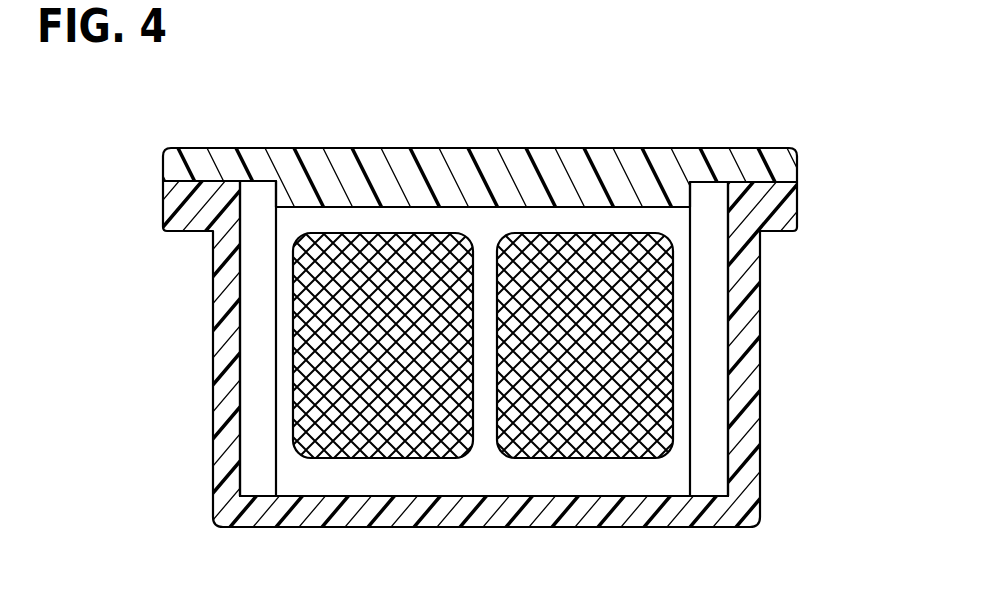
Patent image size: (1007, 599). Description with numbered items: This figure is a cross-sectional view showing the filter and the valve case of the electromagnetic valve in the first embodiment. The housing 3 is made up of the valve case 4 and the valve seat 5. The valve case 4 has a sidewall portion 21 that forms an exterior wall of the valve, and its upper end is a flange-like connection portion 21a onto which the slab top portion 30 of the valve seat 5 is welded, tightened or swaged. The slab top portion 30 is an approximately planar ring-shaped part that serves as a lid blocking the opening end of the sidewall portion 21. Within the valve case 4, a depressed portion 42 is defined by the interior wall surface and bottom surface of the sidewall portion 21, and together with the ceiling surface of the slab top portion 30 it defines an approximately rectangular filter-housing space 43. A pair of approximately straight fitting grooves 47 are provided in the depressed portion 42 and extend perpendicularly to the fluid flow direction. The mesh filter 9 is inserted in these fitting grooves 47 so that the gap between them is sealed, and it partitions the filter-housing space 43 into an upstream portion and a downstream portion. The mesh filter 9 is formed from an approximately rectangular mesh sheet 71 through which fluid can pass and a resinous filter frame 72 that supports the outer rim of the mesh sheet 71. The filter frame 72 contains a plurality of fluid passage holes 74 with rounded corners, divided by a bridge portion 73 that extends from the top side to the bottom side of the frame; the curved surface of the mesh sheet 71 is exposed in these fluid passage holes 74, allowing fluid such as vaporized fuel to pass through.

The housing 3 is at (270, 131).
The valve case 4 is at (503, 367).
The valve seat 5 is at (486, 148).
The mesh filter 9 is at (483, 249).
The sidewall portion 21 is at (748, 275).
The connection portion 21a is at (788, 203).
The slab top portion 30 is at (398, 173).
The depressed portion 42 is at (587, 522).
The filter-housing space 43 is at (619, 497).
The fitting groove 47 is at (257, 372).
The mesh sheet 71 is at (545, 243).
The filter frame 72 is at (607, 210).
The bridge portion 73 is at (485, 273).
The fluid passage hole 74 is at (348, 458).